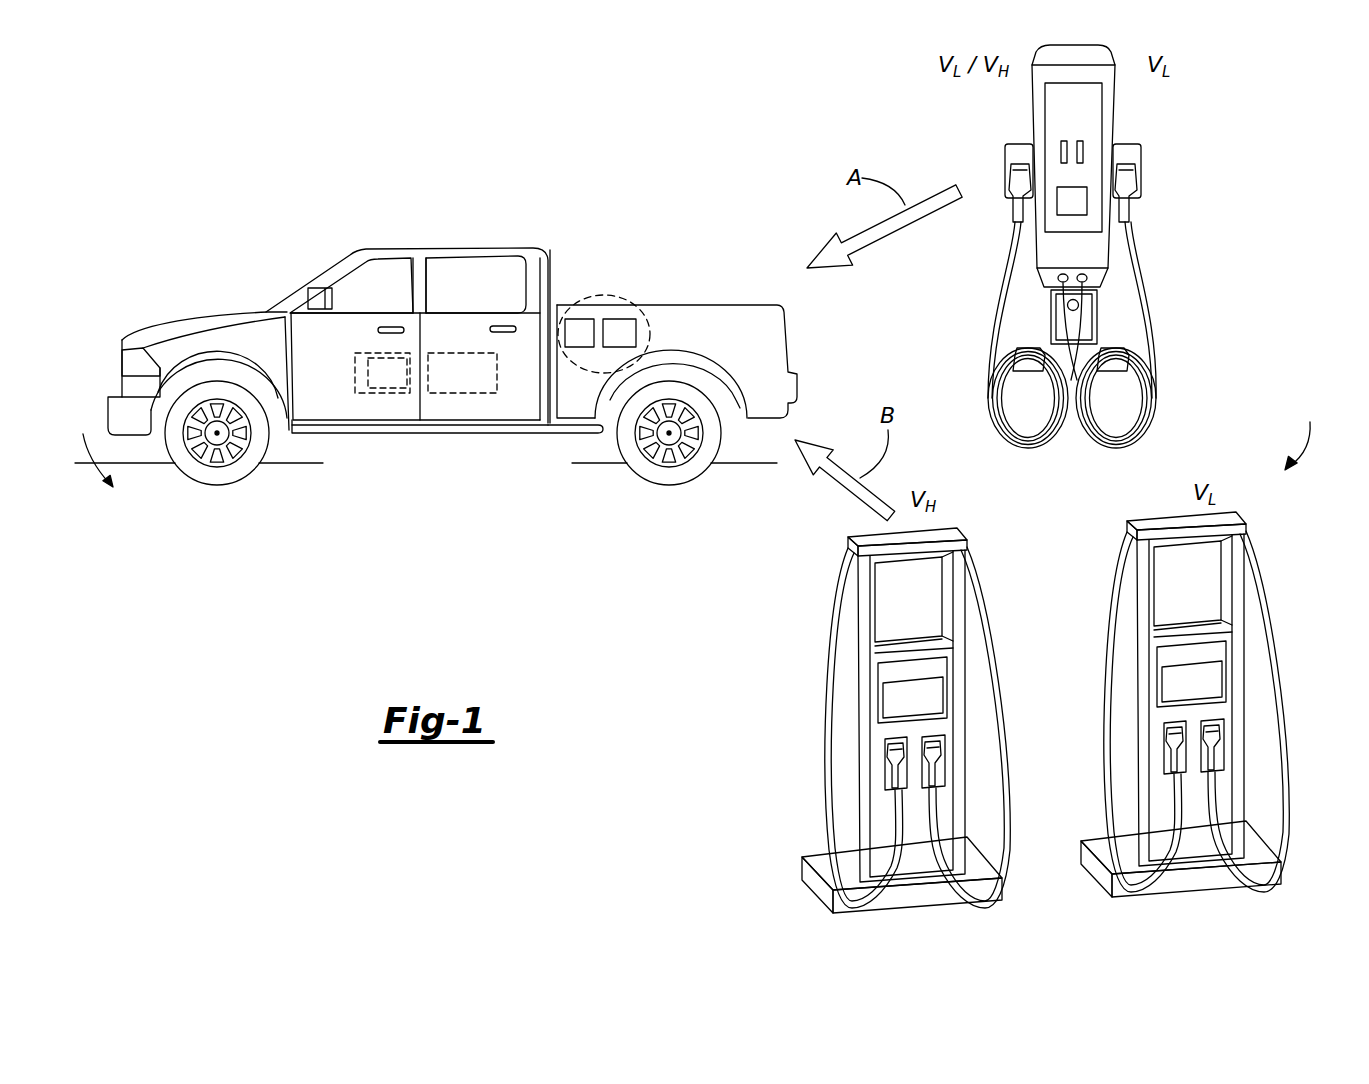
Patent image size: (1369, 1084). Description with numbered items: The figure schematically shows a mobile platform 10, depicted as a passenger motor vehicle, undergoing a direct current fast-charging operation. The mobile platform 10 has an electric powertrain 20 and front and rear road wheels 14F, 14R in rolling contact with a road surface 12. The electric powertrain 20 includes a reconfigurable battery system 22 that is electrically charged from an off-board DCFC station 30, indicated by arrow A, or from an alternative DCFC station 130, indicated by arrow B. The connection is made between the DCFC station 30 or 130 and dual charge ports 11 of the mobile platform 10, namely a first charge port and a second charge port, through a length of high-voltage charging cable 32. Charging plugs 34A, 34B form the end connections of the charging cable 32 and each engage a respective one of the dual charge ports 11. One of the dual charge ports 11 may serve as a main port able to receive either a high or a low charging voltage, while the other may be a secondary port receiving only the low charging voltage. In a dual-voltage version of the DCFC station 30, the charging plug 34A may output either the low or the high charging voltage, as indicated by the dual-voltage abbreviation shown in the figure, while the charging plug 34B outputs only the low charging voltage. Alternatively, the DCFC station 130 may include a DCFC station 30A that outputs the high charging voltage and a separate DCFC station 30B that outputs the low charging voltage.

The mobile platform 10 is at (581, 181).
The dual charge ports 11 is at (601, 293).
The road surface 12 is at (95, 449).
The front road wheels 14F is at (220, 485).
The rear road wheels 14R is at (670, 485).
The electric powertrain 20 is at (462, 373).
The reconfigurable battery system 22 is at (382, 373).
The DCFC station 30 is at (1166, 110).
The DCFC station 30A is at (930, 903).
The DCFC station 30B is at (1210, 890).
The high-voltage charging cable 32 is at (988, 368).
The charging plug 34A is at (1005, 165).
The charging plug 34B is at (1143, 170).
The DCFC station 130 is at (1310, 433).